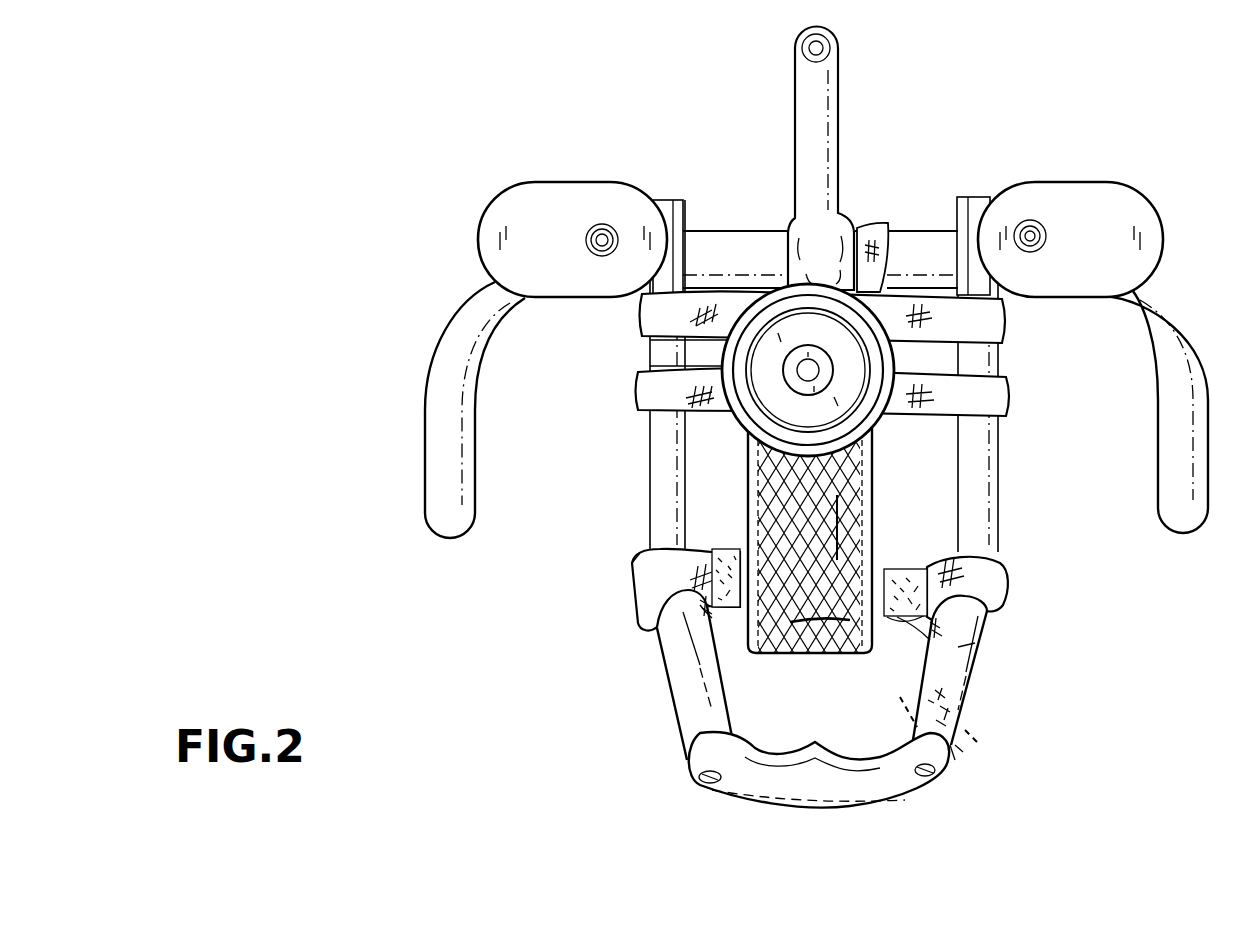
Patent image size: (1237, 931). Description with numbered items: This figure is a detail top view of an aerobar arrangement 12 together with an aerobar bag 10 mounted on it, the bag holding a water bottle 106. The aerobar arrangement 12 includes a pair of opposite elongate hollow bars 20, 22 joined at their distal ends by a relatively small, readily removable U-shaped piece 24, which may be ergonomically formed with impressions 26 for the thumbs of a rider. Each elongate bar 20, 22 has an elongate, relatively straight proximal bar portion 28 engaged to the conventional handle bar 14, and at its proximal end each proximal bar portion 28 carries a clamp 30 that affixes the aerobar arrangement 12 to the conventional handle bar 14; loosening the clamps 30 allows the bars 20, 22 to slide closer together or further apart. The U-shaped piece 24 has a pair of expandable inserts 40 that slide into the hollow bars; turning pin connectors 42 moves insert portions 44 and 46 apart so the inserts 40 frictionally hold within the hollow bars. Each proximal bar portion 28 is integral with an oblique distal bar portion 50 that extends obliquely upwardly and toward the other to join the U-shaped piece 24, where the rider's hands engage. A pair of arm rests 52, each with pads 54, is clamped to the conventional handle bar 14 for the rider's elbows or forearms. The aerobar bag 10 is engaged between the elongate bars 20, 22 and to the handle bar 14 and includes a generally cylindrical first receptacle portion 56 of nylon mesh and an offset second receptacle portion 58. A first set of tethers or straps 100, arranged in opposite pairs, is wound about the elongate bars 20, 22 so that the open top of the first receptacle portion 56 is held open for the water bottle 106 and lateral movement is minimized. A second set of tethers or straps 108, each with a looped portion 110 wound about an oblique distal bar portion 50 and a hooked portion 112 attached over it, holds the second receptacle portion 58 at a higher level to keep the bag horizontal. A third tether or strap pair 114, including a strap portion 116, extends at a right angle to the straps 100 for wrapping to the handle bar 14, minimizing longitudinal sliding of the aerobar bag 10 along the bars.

The aerobar bag 10 is at (686, 540).
The aerobar arrangement 12 is at (625, 158).
The conventional handle bar 14 is at (900, 250).
The elongate hollow bar 20 is at (980, 513).
The elongate hollow bar 22 is at (660, 510).
The U-shaped piece 24 is at (797, 753).
The impressions 26 is at (877, 760).
The proximal bar portion 28 is at (665, 440).
The clamp 30 is at (667, 212).
The expandable insert 40 is at (966, 754).
The pin connector 42 is at (960, 678).
The insert portion 44 is at (968, 742).
The insert portion 46 is at (928, 638).
The oblique distal bar portion 50 is at (680, 660).
The arm rest 52 is at (548, 200).
The pad 54 is at (520, 222).
The first receptacle portion 56 is at (730, 357).
The second receptacle portion 58 is at (870, 497).
The first set of tethers or straps 100 is at (652, 313).
The water bottle 106 is at (783, 313).
The second set of tethers or straps 108 is at (628, 611).
The looped Velcro portion 110 is at (730, 548).
The hooked Velcro portion 112 is at (702, 627).
The third tether or strap pair 114 is at (860, 206).
The hooked Velcro strap portion 116 is at (880, 225).